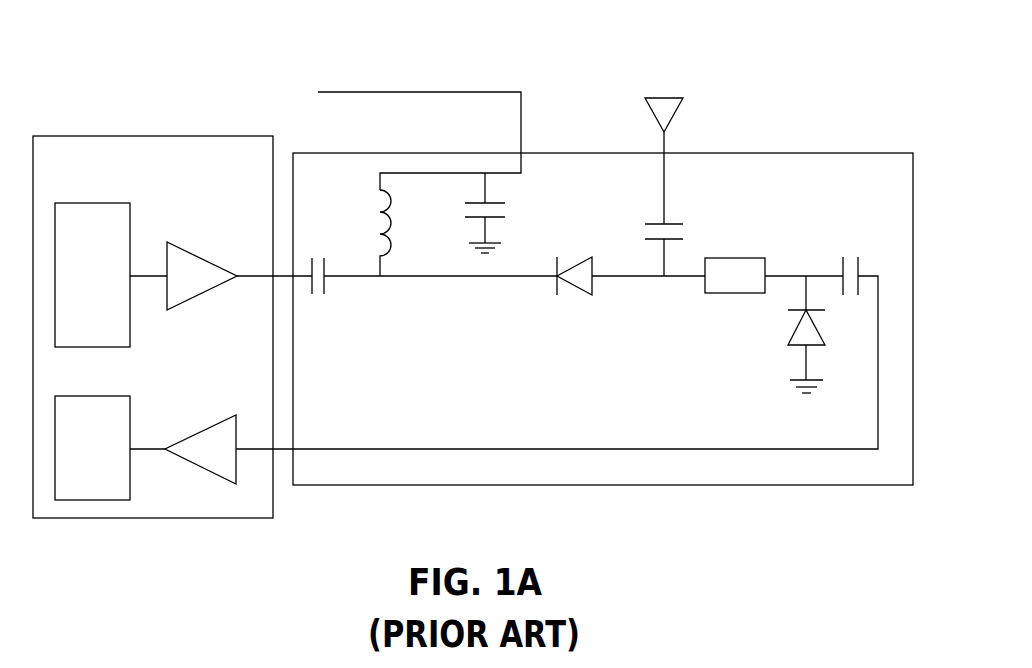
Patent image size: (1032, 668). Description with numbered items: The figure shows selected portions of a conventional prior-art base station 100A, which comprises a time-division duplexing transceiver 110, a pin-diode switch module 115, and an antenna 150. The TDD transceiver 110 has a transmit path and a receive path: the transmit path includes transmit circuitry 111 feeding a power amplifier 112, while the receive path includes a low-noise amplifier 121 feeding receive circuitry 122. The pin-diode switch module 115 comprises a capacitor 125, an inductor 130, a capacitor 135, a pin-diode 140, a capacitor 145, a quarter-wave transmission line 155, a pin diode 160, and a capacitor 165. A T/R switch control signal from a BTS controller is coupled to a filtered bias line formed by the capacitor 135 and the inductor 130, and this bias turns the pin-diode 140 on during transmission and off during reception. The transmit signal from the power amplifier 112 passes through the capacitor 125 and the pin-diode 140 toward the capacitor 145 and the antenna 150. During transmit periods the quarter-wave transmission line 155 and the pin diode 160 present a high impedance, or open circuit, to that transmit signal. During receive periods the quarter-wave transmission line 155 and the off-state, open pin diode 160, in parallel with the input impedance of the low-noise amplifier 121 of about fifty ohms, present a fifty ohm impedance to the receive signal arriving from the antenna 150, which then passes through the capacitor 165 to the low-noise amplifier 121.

The base station 100A is at (628, 59).
The time-division duplexing transceiver 110 is at (92, 135).
The transmit circuitry 111 is at (130, 325).
The power amplifier 112 is at (206, 259).
The pin-diode switch module 115 is at (592, 151).
The low-noise amplifier 121 is at (200, 432).
The receive circuitry 122 is at (130, 485).
The capacitor 125 is at (326, 283).
The inductor 130 is at (398, 220).
The capacitor 135 is at (500, 203).
The pin-diode 140 is at (573, 292).
The capacitor 145 is at (670, 223).
The antenna 150 is at (676, 119).
The quarter-wave transmission line 155 is at (735, 258).
The pin diode 160 is at (797, 325).
The capacitor 165 is at (862, 263).